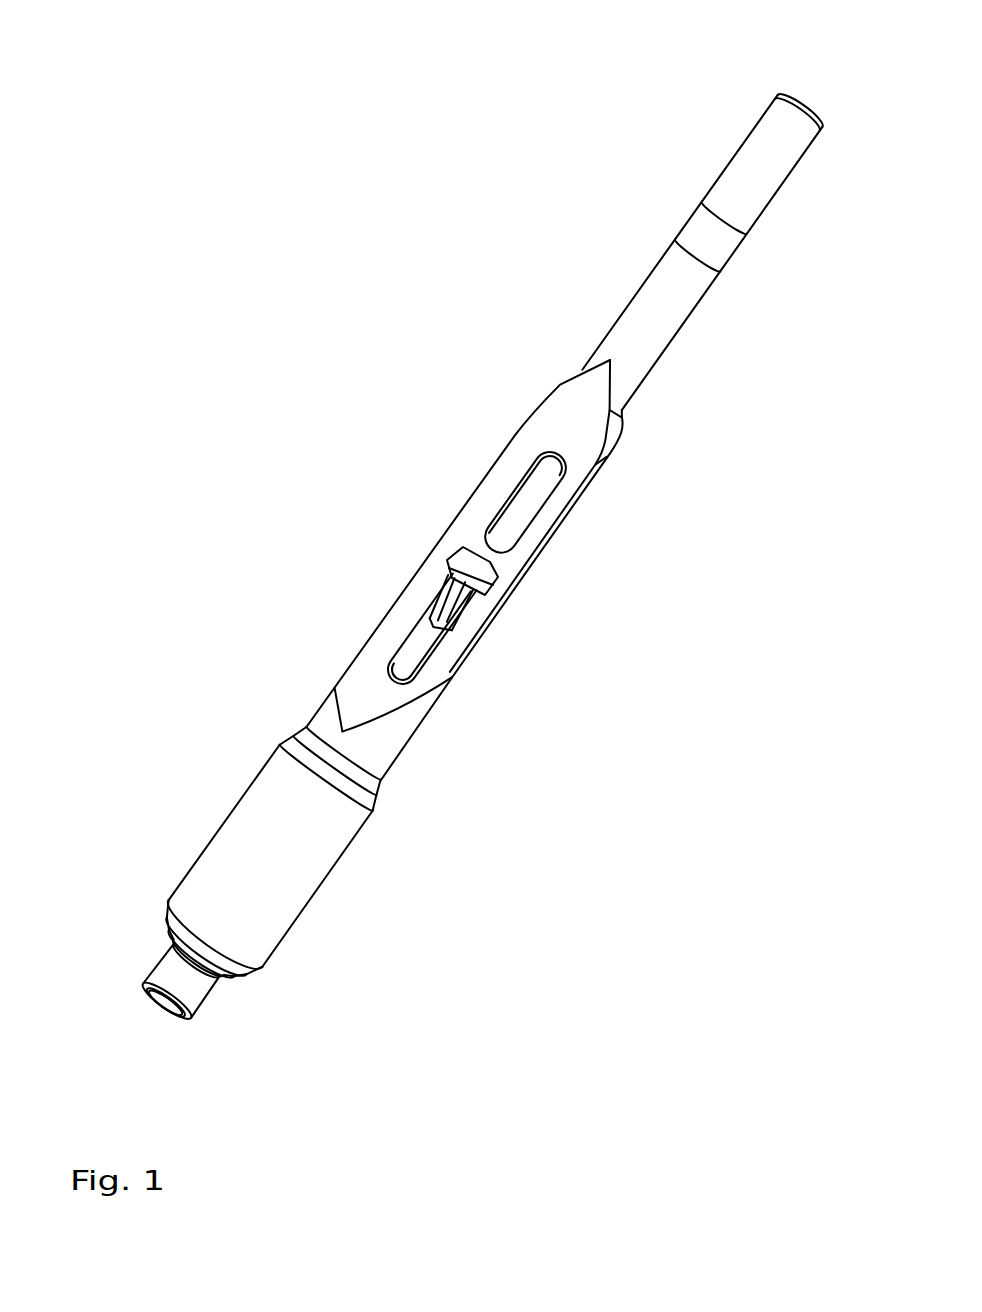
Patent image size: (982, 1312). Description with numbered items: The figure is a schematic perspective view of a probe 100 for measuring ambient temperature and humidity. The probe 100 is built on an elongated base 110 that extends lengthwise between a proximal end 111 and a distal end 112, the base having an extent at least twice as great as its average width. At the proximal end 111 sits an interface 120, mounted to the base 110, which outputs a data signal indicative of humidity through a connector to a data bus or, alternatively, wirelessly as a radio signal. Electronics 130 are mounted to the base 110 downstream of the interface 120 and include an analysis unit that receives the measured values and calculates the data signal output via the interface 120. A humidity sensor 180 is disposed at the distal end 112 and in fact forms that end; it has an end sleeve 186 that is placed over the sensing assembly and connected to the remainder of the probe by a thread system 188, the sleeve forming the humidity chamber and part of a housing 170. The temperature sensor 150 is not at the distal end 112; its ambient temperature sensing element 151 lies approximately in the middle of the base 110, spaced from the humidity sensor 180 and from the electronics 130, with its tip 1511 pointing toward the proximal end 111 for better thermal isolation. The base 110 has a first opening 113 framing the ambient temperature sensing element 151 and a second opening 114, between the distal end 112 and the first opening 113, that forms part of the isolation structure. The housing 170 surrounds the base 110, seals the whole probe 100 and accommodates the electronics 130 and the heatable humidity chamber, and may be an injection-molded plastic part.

The probe 100 is at (278, 248).
The base 110 is at (603, 458).
The proximal end 111 is at (175, 1038).
The distal end 112 is at (809, 86).
The first opening 113 is at (408, 658).
The second opening 114 is at (513, 523).
The interface 120 is at (158, 961).
The electronics 130 is at (366, 856).
The temperature sensor 150 is at (432, 583).
The ambient temperature sensing element 151 is at (447, 607).
The tip 1511 is at (432, 627).
The housing 170 is at (760, 183).
The humidity sensor 180 is at (657, 195).
The end sleeve 186 is at (745, 161).
The thread system 188 is at (720, 245).